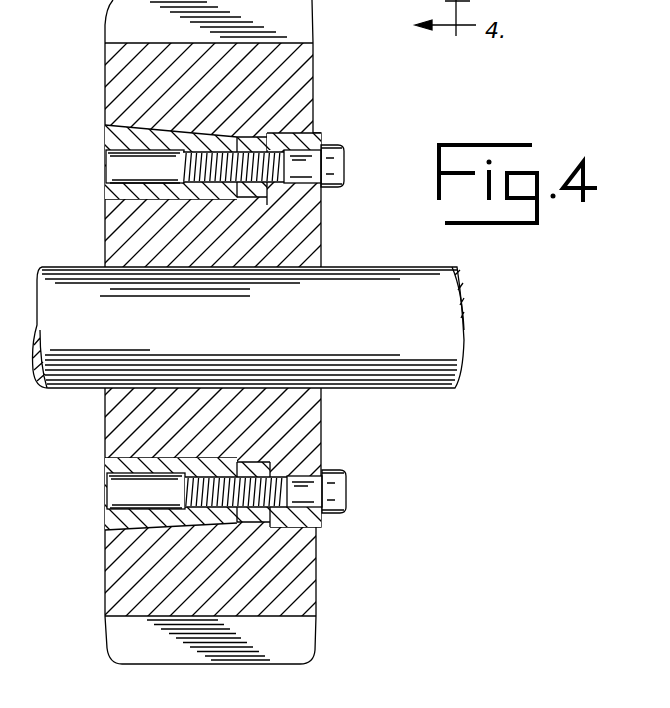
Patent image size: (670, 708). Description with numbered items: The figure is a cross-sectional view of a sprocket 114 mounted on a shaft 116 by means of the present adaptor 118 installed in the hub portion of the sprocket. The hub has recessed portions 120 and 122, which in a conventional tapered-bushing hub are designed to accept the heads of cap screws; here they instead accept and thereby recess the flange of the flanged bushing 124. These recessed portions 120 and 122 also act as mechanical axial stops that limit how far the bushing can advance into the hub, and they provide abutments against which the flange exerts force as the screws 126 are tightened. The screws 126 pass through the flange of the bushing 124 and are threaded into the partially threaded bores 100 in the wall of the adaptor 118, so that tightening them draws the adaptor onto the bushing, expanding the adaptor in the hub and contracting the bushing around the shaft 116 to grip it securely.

The threaded bores 100 is at (123, 187).
The sprocket 114 is at (313, 30).
The shaft 116 is at (466, 358).
The adaptor 118 is at (105, 134).
The recessed portion of the hub 120 is at (283, 133).
The recessed portion of the hub 122 is at (270, 528).
The flanged bushing 124 is at (322, 425).
The screws 126 is at (345, 188).